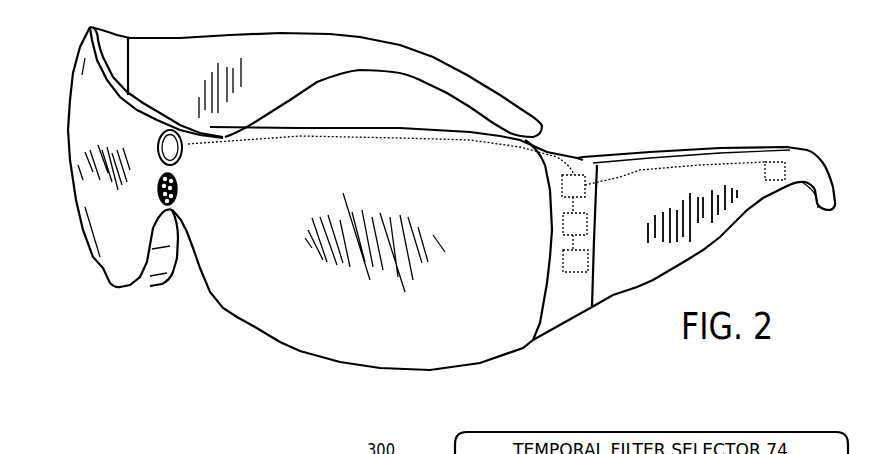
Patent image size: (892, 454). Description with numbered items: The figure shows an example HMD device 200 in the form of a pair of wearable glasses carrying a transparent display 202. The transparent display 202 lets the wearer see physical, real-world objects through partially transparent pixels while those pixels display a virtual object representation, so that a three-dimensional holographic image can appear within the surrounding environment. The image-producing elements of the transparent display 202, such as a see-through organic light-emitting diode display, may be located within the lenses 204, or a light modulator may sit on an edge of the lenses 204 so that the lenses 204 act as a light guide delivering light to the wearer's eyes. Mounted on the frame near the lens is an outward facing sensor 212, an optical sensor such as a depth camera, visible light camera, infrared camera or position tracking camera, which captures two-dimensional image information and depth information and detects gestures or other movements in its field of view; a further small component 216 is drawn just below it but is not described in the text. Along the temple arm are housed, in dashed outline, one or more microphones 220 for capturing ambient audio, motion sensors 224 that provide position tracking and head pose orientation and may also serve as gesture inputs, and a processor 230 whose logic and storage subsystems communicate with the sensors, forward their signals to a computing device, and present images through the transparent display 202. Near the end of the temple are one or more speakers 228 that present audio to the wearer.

The HMD device 200 is at (95, 328).
The transparent display 202 is at (250, 306).
The lenses 204 is at (112, 262).
The outward facing sensor 212 is at (197, 146).
The microphone 216 is at (194, 189).
The microphones 220 is at (581, 175).
The motion sensors 224 is at (589, 206).
The speakers 228 is at (776, 162).
The processor 230 is at (590, 243).